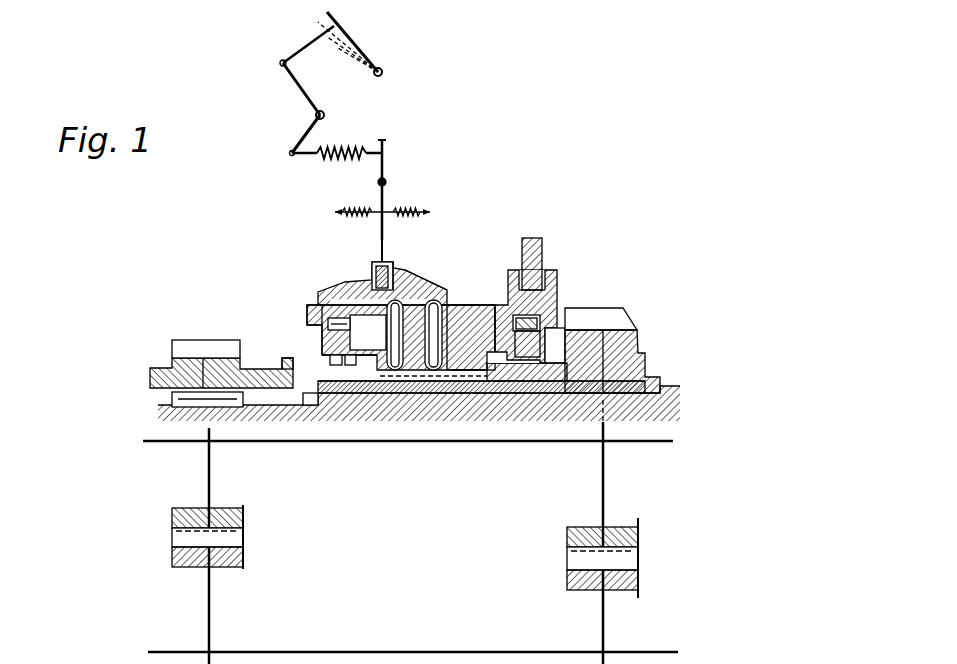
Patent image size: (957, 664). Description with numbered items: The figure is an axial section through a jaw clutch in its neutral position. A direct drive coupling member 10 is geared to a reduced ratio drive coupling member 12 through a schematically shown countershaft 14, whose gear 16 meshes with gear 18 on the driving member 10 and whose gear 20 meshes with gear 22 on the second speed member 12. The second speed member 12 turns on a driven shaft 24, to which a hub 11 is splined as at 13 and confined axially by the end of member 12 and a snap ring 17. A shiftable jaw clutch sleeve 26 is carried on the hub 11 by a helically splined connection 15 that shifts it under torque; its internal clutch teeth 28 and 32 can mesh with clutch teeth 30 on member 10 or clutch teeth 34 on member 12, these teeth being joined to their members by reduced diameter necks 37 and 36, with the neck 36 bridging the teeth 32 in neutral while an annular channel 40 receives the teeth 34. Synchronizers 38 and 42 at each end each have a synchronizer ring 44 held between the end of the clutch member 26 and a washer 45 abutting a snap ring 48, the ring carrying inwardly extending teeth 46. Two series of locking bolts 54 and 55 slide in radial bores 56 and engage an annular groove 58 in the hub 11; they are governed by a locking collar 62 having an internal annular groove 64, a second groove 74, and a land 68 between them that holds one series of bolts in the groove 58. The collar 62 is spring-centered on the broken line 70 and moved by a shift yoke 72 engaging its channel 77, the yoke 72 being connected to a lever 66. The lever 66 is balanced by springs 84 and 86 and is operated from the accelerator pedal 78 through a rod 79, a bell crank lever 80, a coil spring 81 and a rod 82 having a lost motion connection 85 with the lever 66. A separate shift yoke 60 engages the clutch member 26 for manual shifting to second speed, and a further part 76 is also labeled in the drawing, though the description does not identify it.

The direct drive coupling member 10 is at (348, 252).
The hub 11 is at (538, 245).
The reduced ratio drive coupling member 12 is at (646, 360).
The spline 13 is at (444, 395).
The countershaft 14 is at (407, 651).
The helically splined connection 15 is at (466, 395).
The gear 16 is at (172, 561).
The snap ring 17 is at (303, 407).
The gear 18 is at (190, 341).
The gear 20 is at (640, 580).
The gear 22 is at (624, 309).
The driven shaft 24 is at (655, 440).
The shiftable jaw clutch sleeve 26 is at (481, 302).
The internal clutch teeth 28 is at (350, 367).
The clutch teeth 30 is at (285, 356).
The internal clutch teeth 32 is at (522, 395).
The clutch teeth 34 is at (500, 395).
The reduced diameter neck 36 is at (567, 395).
The reduced diameter neck 37 is at (256, 369).
The synchronizer 38 is at (556, 348).
The annular channel 40 is at (495, 340).
The synchronizer 42 is at (320, 358).
The synchronizer ring 44 is at (543, 349).
The washer 45 is at (320, 327).
The inwardly extending teeth 46 is at (310, 406).
The snap ring 48 is at (308, 303).
The locking bolts 54 is at (402, 296).
The locking bolts 55 is at (455, 304).
The radial bores 56 is at (471, 337).
The annular groove 58 is at (337, 367).
The shift yoke 60 is at (532, 238).
The locking collar 62 is at (438, 296).
The internal annular groove 64 is at (345, 290).
The lever 66 is at (386, 166).
The land 68 is at (368, 332).
The broken line 70 is at (389, 262).
The shift yoke 72 is at (376, 264).
The internal annular groove 74 is at (430, 283).
The block 76 is at (545, 268).
The channel 77 is at (396, 263).
The accelerator pedal 78 is at (362, 54).
The rod 79 is at (300, 51).
The bell crank lever 80 is at (300, 87).
The coil spring 81 is at (339, 147).
The rod 82 is at (382, 140).
The spring 84 is at (361, 210).
The lost motion connection 85 is at (386, 151).
The spring 86 is at (407, 210).